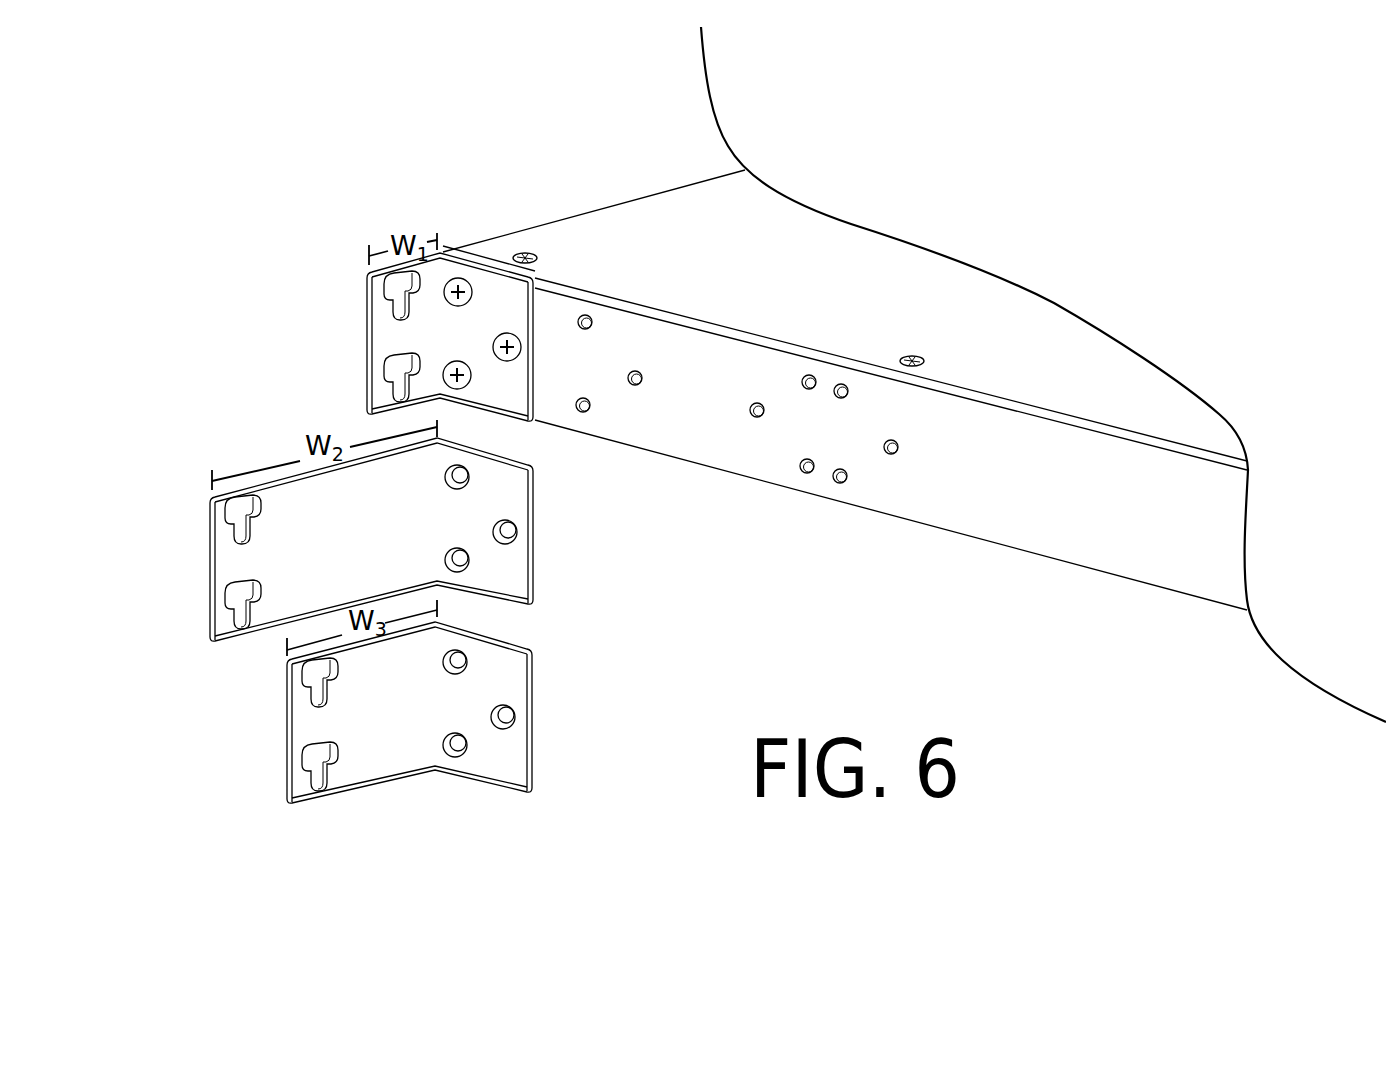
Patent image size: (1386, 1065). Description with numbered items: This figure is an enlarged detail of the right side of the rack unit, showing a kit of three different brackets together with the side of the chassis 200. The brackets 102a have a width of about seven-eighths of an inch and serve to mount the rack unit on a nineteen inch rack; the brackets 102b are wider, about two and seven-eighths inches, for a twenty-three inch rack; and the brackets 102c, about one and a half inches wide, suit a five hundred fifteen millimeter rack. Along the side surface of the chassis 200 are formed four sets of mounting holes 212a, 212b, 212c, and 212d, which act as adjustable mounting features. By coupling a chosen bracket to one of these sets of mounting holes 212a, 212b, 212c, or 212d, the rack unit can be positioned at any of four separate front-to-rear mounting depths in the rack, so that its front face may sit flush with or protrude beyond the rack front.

The chassis 200 is at (630, 237).
The first set of mounting holes 212a is at (521, 256).
The second set of mounting holes 212b is at (647, 437).
The third set of mounting holes 212c is at (810, 480).
The fourth set of mounting holes 212d is at (895, 507).
The bracket 102a is at (382, 341).
The bracket 102b is at (232, 571).
The bracket 102c is at (308, 733).